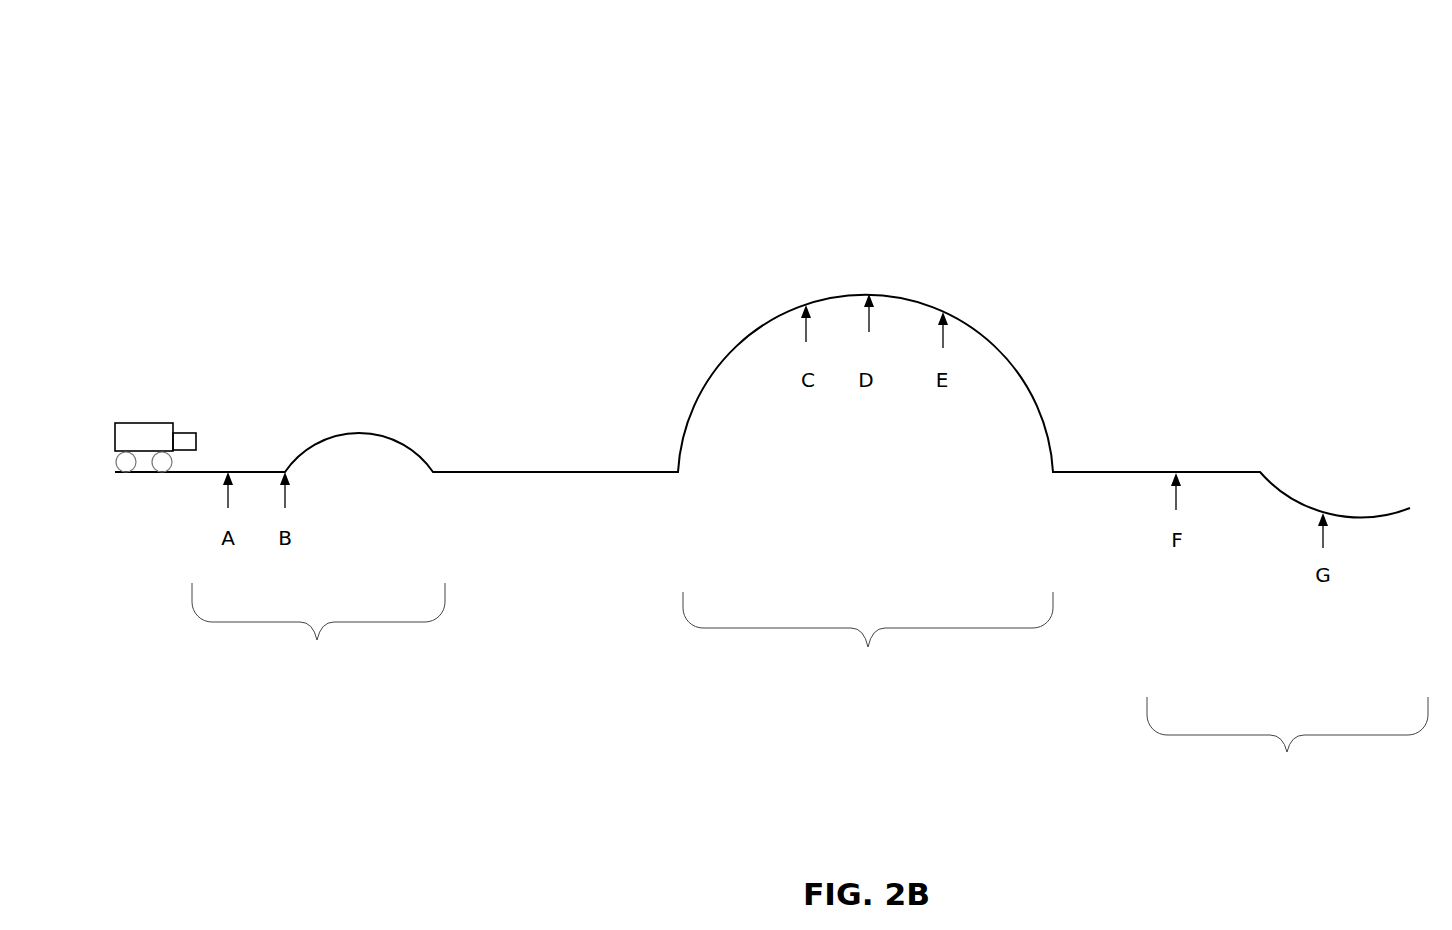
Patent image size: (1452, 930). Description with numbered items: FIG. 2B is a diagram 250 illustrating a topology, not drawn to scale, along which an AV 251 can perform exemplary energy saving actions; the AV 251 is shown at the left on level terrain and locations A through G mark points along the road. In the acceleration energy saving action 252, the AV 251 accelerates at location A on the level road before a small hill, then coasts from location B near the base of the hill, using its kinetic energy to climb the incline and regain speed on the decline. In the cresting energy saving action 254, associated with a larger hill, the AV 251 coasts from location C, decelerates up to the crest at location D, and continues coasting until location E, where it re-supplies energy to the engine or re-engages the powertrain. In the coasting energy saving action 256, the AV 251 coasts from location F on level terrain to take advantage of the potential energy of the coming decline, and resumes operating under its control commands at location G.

The diagram 250 is at (203, 88).
The AV 251 is at (146, 424).
The acceleration energy saving action 252 is at (316, 648).
The cresting energy saving action 254 is at (868, 652).
The coasting energy saving action 256 is at (1286, 757).